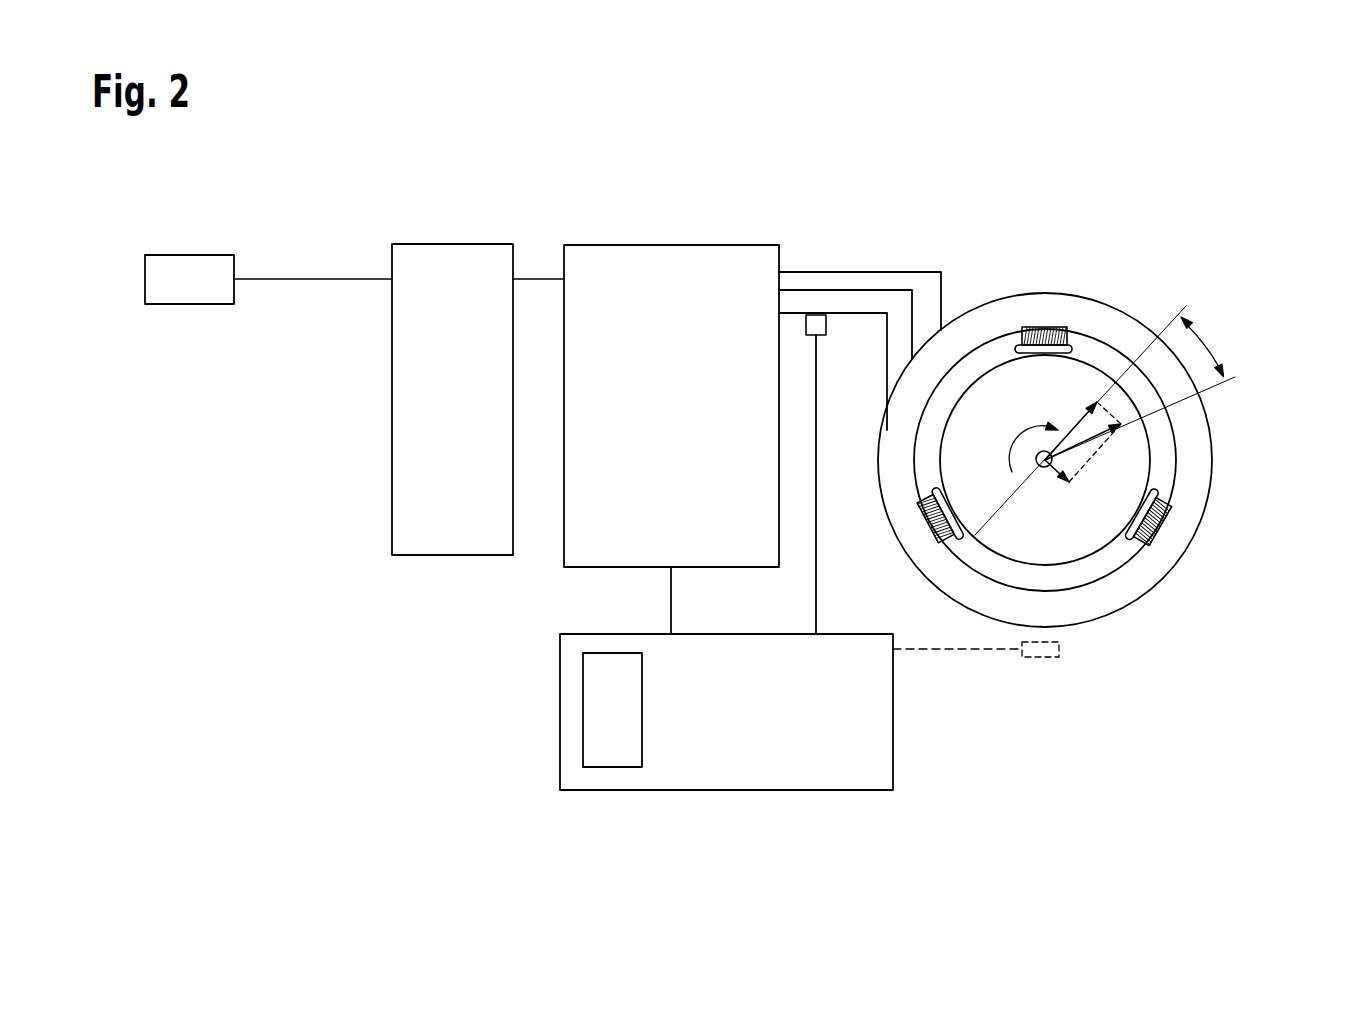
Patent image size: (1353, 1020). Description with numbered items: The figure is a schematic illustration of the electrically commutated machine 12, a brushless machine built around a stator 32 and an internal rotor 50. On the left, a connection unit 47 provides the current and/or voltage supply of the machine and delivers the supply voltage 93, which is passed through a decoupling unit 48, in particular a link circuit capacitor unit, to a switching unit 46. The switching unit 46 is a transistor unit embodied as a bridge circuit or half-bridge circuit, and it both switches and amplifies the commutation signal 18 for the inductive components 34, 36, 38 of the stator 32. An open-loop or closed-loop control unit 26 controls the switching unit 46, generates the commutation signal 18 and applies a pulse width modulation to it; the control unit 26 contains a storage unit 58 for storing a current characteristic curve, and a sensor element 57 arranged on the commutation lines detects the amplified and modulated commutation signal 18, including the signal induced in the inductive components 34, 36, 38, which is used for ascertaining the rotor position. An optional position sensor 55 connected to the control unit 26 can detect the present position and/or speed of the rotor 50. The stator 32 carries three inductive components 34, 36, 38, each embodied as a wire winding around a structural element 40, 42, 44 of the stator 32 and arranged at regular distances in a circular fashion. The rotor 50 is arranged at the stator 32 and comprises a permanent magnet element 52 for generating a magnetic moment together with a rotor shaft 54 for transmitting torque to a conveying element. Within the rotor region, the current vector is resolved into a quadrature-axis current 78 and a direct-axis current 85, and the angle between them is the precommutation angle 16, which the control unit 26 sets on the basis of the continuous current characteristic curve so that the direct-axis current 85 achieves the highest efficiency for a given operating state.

The electrically commutated machine 12 is at (1202, 134).
The precommutation angle 16 is at (1207, 343).
The commutation signal 18 is at (867, 259).
The open-loop or closed-loop control unit 26 is at (792, 790).
The stator 32 is at (1207, 410).
The inductive component 34 is at (1023, 323).
The inductive component 36 is at (922, 498).
The inductive component 38 is at (1145, 557).
The structural element 40 is at (1072, 346).
The structural element 42 is at (930, 489).
The structural element 44 is at (1160, 490).
The switching unit 46 is at (672, 245).
The connection unit 47 is at (194, 255).
The decoupling unit 48 is at (453, 244).
The rotor 50 is at (1177, 440).
The magnet element 52 is at (1125, 465).
The rotor shaft 54 is at (1040, 468).
The position sensor 55 is at (1040, 657).
The sensor element 57 is at (827, 327).
The storage unit 58 is at (612, 767).
The quadrature-axis current 78 is at (1070, 432).
The direct-axis current 85 is at (1048, 468).
The supply voltage 93 is at (313, 279).